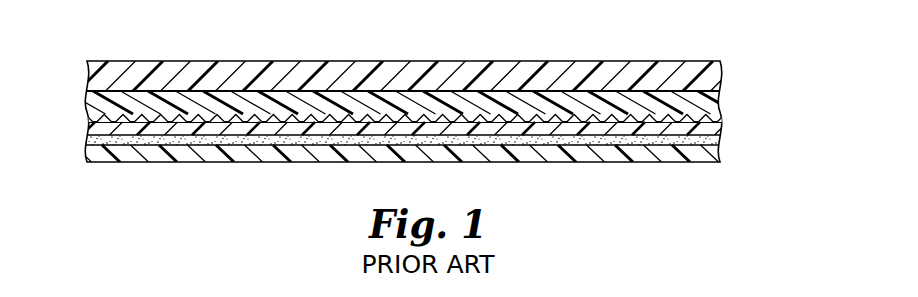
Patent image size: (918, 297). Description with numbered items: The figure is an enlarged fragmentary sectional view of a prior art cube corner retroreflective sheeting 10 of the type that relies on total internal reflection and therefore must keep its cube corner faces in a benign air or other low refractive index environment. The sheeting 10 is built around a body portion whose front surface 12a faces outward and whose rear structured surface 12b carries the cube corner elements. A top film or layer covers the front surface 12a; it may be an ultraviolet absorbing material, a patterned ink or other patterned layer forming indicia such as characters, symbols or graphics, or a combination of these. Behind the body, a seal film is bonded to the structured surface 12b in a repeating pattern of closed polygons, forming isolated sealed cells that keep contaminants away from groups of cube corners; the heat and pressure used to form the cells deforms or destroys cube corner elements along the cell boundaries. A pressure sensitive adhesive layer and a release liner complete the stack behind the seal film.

The prior art sheeting 10 is at (650, 40).
The front surface 12a is at (316, 92).
The rear structured surface 12b is at (326, 122).